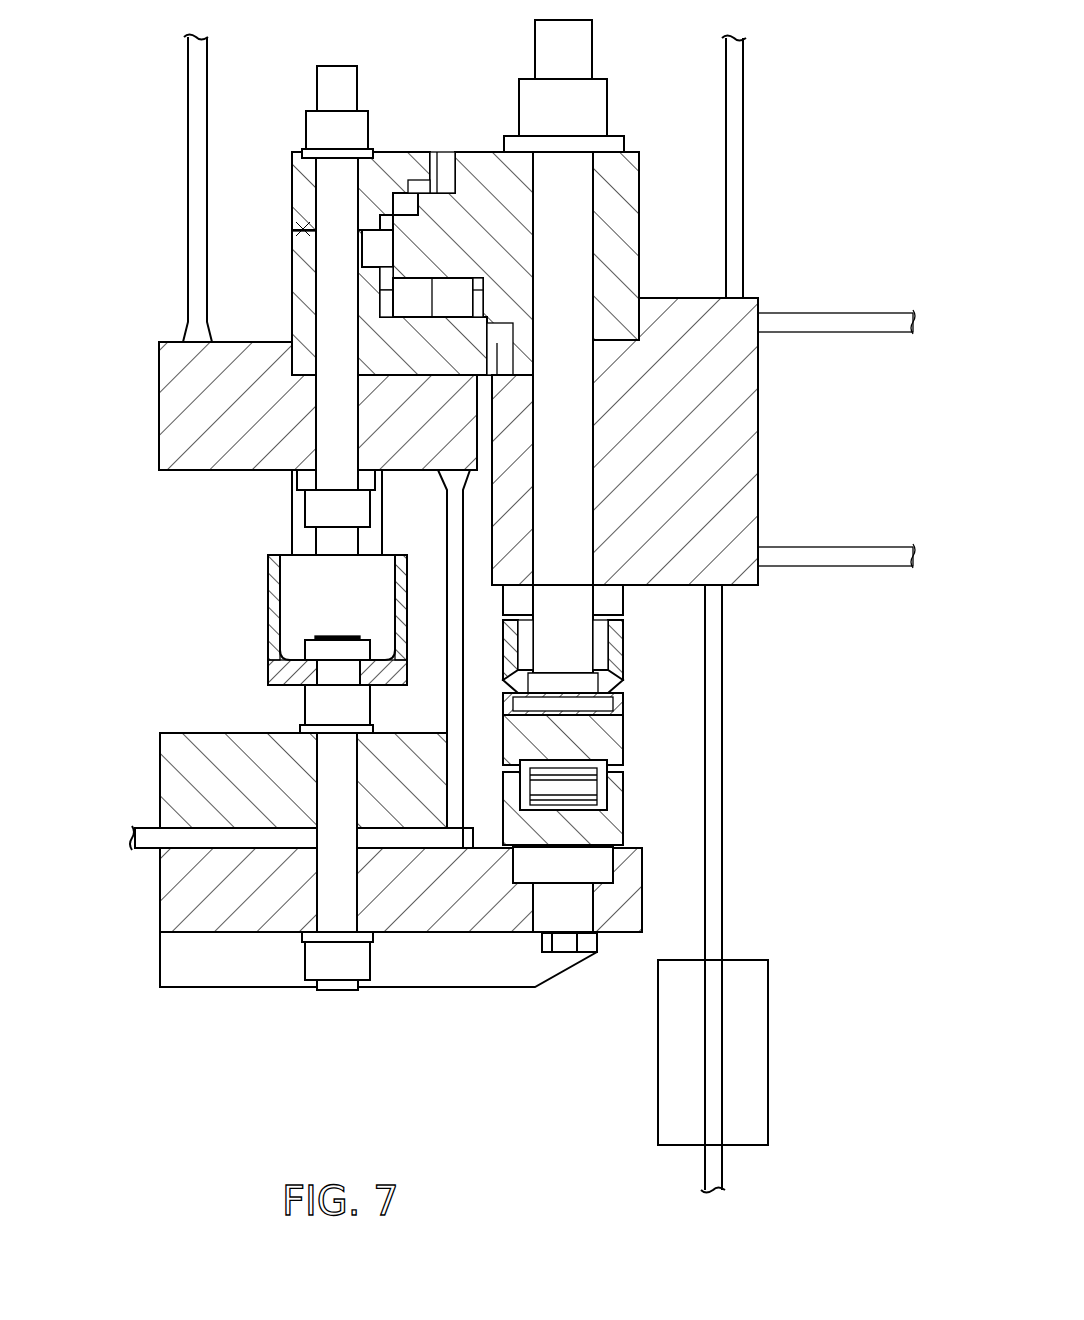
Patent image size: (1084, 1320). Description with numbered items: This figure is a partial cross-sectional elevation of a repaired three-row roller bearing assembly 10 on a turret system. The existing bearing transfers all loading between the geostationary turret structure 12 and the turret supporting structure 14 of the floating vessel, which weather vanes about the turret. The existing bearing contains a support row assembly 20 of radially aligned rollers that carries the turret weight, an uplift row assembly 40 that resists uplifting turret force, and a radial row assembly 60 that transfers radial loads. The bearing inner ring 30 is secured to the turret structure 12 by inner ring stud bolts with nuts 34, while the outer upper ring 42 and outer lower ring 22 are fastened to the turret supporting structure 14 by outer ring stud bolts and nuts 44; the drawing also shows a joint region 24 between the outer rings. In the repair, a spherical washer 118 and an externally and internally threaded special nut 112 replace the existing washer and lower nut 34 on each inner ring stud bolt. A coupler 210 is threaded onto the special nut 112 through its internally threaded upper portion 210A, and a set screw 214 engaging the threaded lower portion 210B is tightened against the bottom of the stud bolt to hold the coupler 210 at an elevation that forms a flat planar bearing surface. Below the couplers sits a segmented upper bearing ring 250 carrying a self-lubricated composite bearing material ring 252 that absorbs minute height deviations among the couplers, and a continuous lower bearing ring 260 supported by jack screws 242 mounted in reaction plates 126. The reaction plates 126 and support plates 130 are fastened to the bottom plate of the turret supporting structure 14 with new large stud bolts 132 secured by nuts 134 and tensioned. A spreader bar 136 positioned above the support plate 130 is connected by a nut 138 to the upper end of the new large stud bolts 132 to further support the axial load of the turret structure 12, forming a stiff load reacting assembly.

The three-row roller bearing assembly 10 is at (155, 62).
The turret structure 12 is at (750, 475).
The turret supporting structure 14 is at (165, 428).
The support row assembly 20 is at (462, 300).
The outer lower ring 22 is at (300, 310).
The housing joint 24 is at (305, 232).
The bearing inner ring 30 is at (630, 195).
The nut 34 is at (596, 100).
The uplift row assembly 40 is at (403, 193).
The outer upper ring 42 is at (300, 183).
The nut 44 is at (318, 130).
The radial row assembly 60 is at (368, 258).
The special nut 112 is at (598, 612).
The spherical washer 118 is at (612, 598).
The reaction plate 126 is at (168, 880).
The support plate 130 is at (168, 760).
The new large stud bolt 132 is at (338, 992).
The nut 134 is at (320, 962).
The spreader bar 136 is at (275, 660).
The nut 138 is at (320, 648).
The coupler 210 is at (625, 638).
The upper portion of coupler 210A is at (625, 660).
The lower portion of coupler 210B is at (622, 675).
The set screw 214 is at (623, 745).
The jack screw 242 is at (600, 868).
The upper bearing ring 250 is at (623, 800).
The self-lubricated composite bearing material ring 252 is at (623, 712).
The lower bearing ring 260 is at (622, 823).